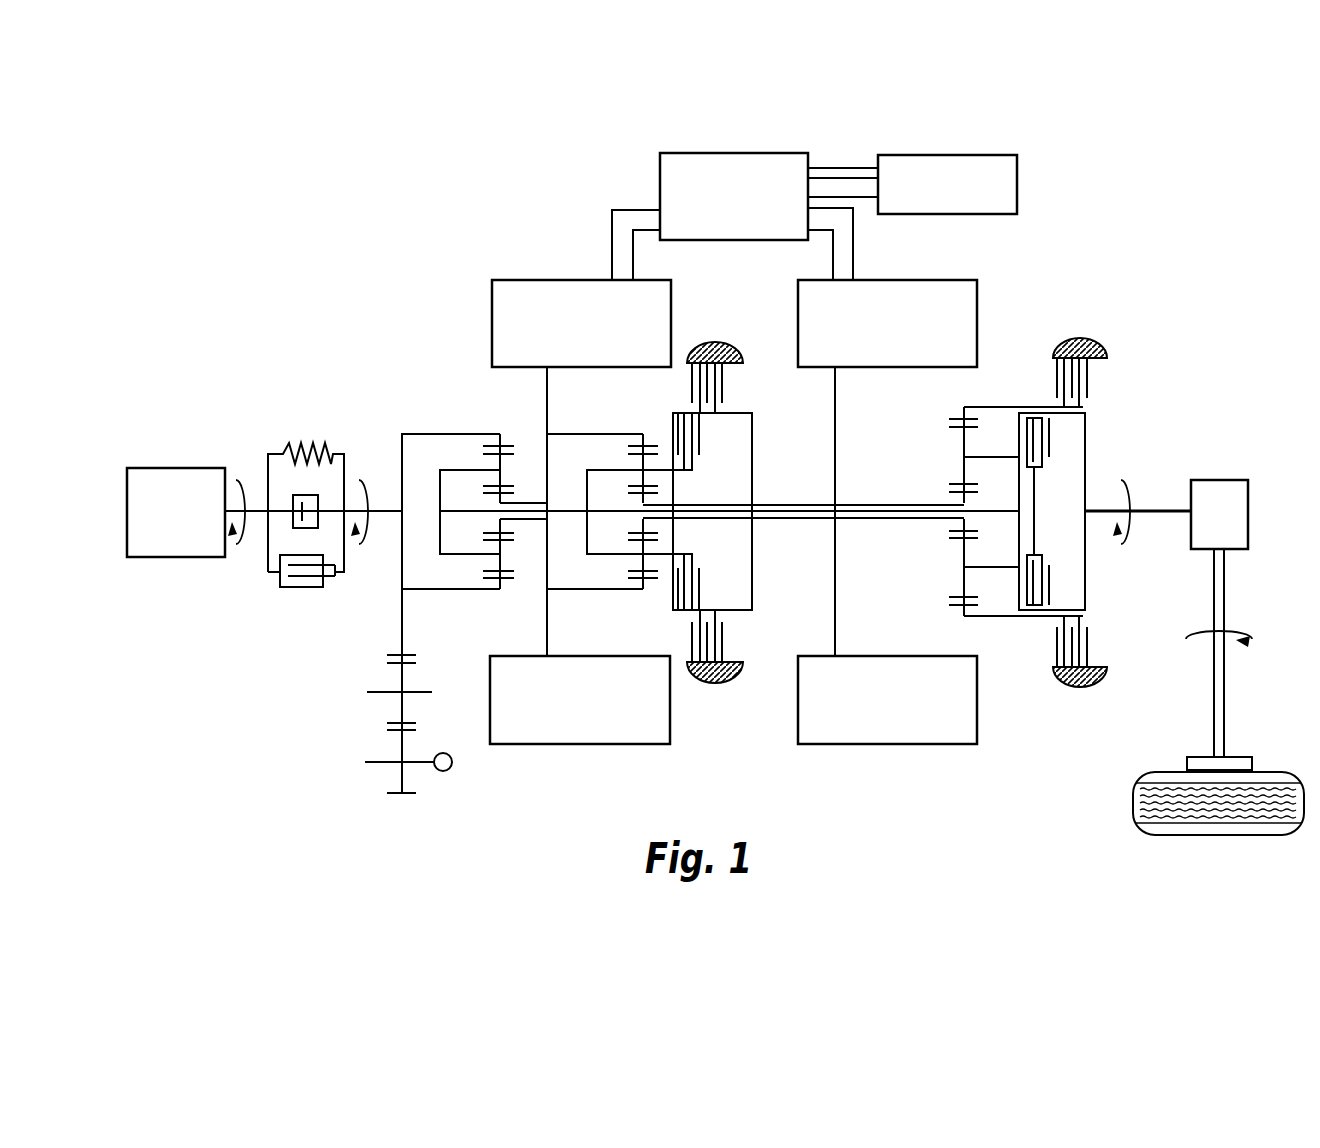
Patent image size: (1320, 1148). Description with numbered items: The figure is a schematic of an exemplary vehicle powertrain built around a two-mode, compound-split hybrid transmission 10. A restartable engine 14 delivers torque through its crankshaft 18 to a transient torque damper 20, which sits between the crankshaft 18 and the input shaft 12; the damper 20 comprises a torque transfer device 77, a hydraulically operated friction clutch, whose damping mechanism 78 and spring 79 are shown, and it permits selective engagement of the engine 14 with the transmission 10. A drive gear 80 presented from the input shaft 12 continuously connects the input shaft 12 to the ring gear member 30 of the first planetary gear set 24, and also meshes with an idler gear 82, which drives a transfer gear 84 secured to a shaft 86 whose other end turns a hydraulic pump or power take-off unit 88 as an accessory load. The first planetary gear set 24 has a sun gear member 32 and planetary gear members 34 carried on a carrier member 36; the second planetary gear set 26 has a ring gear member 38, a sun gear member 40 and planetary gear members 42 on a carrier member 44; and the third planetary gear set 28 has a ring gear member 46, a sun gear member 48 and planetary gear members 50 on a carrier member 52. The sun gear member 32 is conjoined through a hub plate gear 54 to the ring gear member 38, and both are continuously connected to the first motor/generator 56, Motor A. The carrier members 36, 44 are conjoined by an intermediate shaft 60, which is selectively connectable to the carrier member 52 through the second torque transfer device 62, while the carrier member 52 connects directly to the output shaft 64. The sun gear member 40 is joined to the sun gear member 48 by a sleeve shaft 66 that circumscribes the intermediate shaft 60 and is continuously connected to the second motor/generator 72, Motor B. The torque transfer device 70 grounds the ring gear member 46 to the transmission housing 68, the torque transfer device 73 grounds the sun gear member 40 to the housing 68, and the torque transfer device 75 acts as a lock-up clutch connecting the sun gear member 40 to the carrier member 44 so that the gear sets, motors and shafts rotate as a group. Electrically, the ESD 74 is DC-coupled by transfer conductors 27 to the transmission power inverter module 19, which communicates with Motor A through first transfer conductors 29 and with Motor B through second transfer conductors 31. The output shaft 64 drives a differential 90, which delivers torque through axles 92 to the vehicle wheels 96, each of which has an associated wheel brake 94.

The two-mode, compound-split, power transmission 10 is at (392, 236).
The input member 12 is at (383, 506).
The engine 14 is at (161, 468).
The crankshaft 18 is at (262, 505).
The transmission power inverter module 19 is at (660, 182).
The transient torque damper 20 is at (268, 353).
The first planetary gear set 24 is at (478, 416).
The second planetary gear set 26 is at (638, 420).
The transfer conductors 27 is at (857, 168).
The third planetary gear set 28 is at (954, 402).
The first transfer conductors 29 is at (612, 248).
The ring gear member 30 is at (502, 440).
The second transfer conductors 31 is at (853, 260).
The sun gear member 32 is at (504, 502).
The planetary gear members 34 is at (492, 470).
The carrier member 36 is at (440, 532).
The ring gear member 38 is at (646, 440).
The sun gear member 40 is at (650, 504).
The planetary gear members 42 is at (640, 466).
The carrier member 44 is at (587, 532).
The ring gear member 46 is at (949, 421).
The sun gear member 48 is at (949, 493).
The planetary gear members 50 is at (963, 457).
The carrier member 52 is at (1085, 433).
The hub plate gear 54 is at (548, 480).
The first motor/generator 56 is at (492, 297).
The intermediate shaft 60 is at (816, 510).
The second torque transfer device 62 is at (1048, 478).
The transmission output member 64 is at (1166, 510).
The sleeve shaft 66 is at (790, 504).
The transmission housing 68 is at (711, 342).
The torque transfer device 70 is at (1040, 368).
The second motor/generator 72 is at (977, 292).
The torque transfer device 73 is at (740, 378).
The ESD 74 is at (1017, 177).
The torque transfer device 75 is at (718, 458).
The torque transfer device 77 is at (278, 578).
The damping mechanism 78 is at (300, 496).
The spring 79 is at (291, 445).
The drive gear 80 is at (400, 565).
The idler gear 82 is at (397, 678).
The transfer gear 84 is at (397, 783).
The shaft 86 is at (422, 763).
The hydraulic/transmission fluid pump and/or power take-off unit 88 is at (446, 770).
The differential 90 is at (1191, 530).
The vehicular axles 92 is at (1226, 595).
The wheel brake 94 is at (1252, 765).
The vehicle wheels 96 is at (1140, 835).